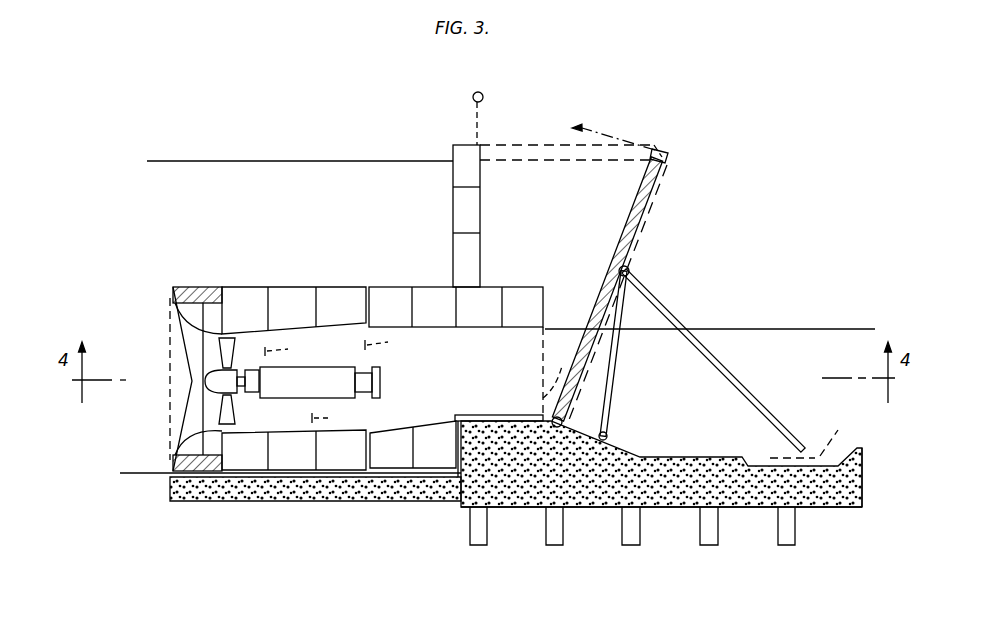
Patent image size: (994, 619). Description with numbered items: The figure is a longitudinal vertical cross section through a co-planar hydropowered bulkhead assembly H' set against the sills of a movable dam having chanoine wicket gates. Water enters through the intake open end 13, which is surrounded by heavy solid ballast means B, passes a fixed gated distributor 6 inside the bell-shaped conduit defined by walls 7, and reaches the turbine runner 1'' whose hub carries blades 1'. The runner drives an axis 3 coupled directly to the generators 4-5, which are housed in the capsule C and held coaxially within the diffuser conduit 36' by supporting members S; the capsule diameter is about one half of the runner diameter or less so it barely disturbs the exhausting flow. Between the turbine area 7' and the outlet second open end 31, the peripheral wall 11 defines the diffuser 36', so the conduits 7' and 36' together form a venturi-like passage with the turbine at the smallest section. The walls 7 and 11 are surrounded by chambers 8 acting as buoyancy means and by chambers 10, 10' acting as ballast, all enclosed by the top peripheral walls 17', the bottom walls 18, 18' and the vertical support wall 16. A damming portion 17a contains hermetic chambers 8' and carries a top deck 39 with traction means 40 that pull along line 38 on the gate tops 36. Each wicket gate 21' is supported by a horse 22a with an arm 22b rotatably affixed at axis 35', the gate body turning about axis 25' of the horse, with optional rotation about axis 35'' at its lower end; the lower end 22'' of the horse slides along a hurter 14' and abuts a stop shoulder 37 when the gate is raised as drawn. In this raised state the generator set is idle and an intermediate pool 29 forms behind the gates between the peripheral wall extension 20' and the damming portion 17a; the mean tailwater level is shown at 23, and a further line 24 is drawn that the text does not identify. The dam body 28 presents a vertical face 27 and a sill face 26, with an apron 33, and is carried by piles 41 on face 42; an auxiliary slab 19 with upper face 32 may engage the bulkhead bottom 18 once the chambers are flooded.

The blades 1' is at (240, 353).
The turbine runner 1'' is at (203, 381).
The axis 3 is at (252, 381).
The generators 4-5 is at (307, 382).
The fixed gated distributor 6 is at (187, 443).
The walls 7 is at (178, 320).
The conduit turbine area 7' is at (247, 409).
The chambers 8 is at (382, 310).
The hermetic chambers 8' is at (466, 216).
The chambers 10 is at (294, 450).
The downstream chambers 10' is at (454, 381).
The peripheral wall 11 is at (487, 328).
The intake open end 13 is at (168, 413).
The hurter 14' is at (661, 464).
The vertical support wall 16 is at (463, 450).
The top peripheral walls 17' is at (348, 269).
The damming portion 17a is at (481, 175).
The bottom walls 18 is at (319, 498).
The bottom wall 18' is at (499, 405).
The auxiliary slab 19 is at (290, 487).
The peripheral wall extension 20' is at (543, 231).
The wicket chanoine gates 21' is at (609, 291).
The horse 22a is at (718, 346).
The arm 22b is at (613, 356).
The lower end of the horse 22'' is at (804, 437).
The mean average tailwater level 23 is at (797, 326).
The high water level 24 is at (219, 158).
The axis 25' is at (647, 260).
The face of the dam body 26 is at (516, 432).
The vertical face 27 is at (486, 425).
The dam body 28 is at (603, 466).
The intermediate pool 29 is at (531, 145).
The outlet open end 31 is at (558, 370).
The upper face 32 is at (365, 475).
The apron 33 is at (862, 450).
The axis 35' is at (626, 434).
The axis 35'' is at (556, 445).
The gate top 36 is at (672, 140).
The diffuser conduit 36' is at (445, 362).
The stop shoulder 37 is at (832, 452).
The line of force 38 is at (598, 126).
The top deck 39 is at (455, 145).
The traction means 40 is at (484, 96).
The piles 41 is at (625, 527).
The face 42 is at (668, 508).
The ballast means B is at (205, 287).
The capsule C is at (352, 396).
The supporting members S is at (334, 380).
The hydropowered bulkhead assembly H' is at (404, 242).